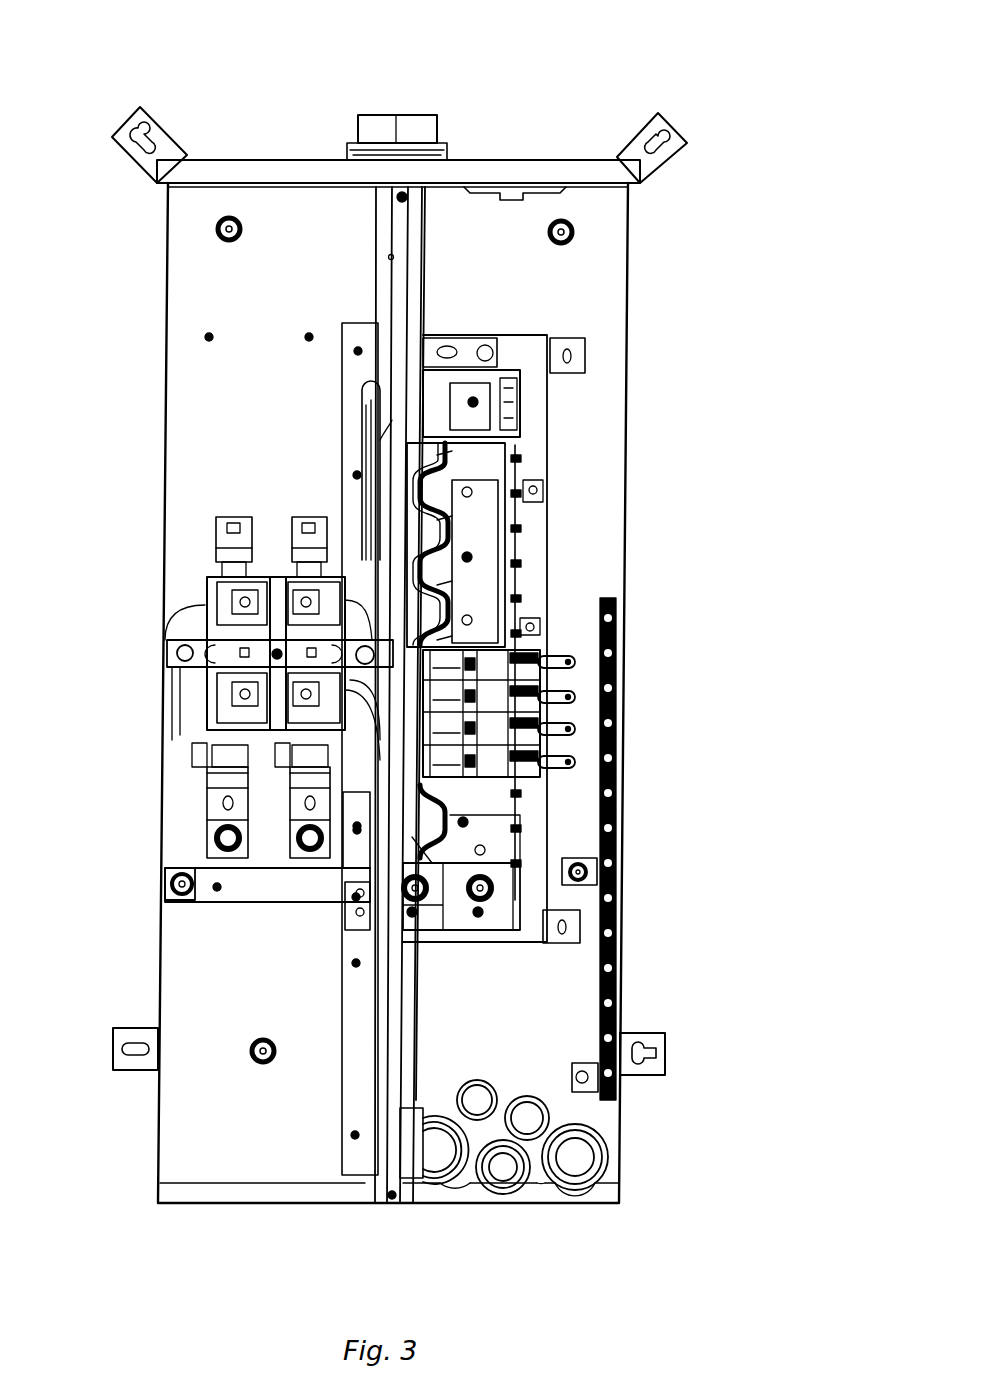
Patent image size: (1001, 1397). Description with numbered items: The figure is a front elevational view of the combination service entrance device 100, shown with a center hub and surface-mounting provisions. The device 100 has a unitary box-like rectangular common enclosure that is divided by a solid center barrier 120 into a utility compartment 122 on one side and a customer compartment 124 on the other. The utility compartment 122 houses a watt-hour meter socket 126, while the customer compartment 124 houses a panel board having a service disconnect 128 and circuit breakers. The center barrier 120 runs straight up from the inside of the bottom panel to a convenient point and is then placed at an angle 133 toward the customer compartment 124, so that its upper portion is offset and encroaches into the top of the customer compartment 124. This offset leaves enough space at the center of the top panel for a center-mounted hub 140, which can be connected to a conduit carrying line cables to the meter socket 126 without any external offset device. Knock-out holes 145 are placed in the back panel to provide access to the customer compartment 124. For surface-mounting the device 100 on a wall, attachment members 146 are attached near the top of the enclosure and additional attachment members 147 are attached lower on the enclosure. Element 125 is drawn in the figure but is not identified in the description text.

The combination service entrance device 100 is at (578, 92).
The solid center barrier 120 is at (437, 200).
The utility compartment 122 is at (298, 298).
The customer compartment 124 is at (541, 298).
The bus bar assembly 125 is at (495, 585).
The watt-hour meter socket 126 is at (205, 605).
The service disconnect 128 is at (555, 648).
The angle 133 is at (430, 193).
The center-mounted hub 140 is at (372, 113).
The knock-out holes 145 is at (575, 1168).
The attachment members 146 is at (135, 140).
The additional attachment members 147 is at (112, 1035).